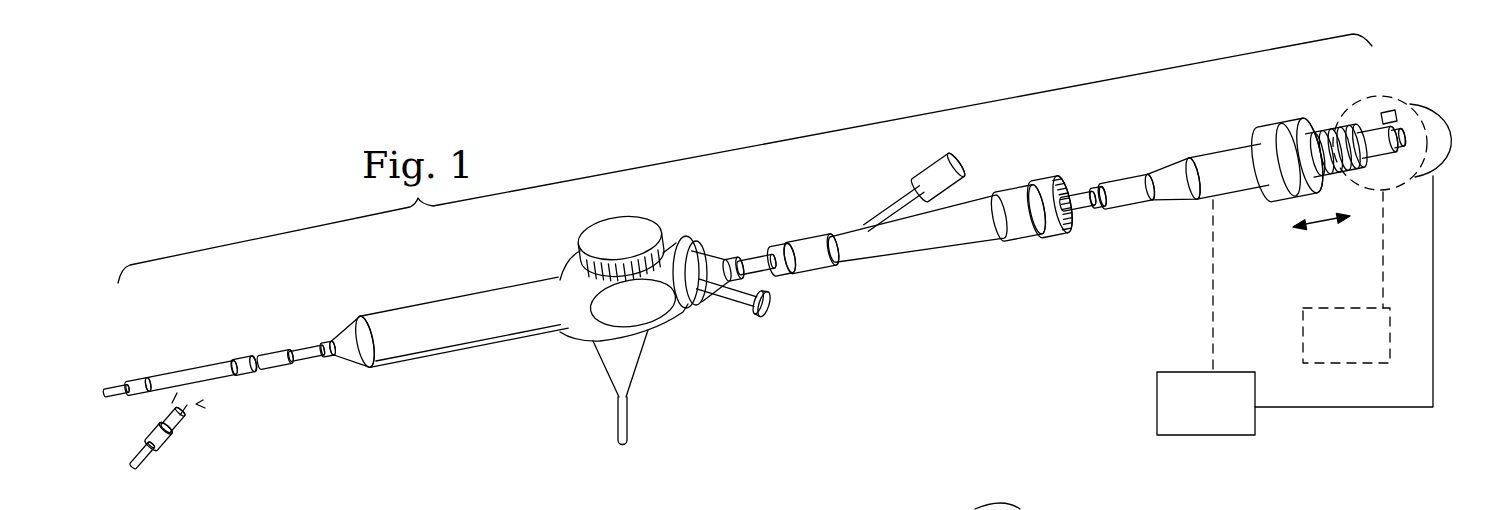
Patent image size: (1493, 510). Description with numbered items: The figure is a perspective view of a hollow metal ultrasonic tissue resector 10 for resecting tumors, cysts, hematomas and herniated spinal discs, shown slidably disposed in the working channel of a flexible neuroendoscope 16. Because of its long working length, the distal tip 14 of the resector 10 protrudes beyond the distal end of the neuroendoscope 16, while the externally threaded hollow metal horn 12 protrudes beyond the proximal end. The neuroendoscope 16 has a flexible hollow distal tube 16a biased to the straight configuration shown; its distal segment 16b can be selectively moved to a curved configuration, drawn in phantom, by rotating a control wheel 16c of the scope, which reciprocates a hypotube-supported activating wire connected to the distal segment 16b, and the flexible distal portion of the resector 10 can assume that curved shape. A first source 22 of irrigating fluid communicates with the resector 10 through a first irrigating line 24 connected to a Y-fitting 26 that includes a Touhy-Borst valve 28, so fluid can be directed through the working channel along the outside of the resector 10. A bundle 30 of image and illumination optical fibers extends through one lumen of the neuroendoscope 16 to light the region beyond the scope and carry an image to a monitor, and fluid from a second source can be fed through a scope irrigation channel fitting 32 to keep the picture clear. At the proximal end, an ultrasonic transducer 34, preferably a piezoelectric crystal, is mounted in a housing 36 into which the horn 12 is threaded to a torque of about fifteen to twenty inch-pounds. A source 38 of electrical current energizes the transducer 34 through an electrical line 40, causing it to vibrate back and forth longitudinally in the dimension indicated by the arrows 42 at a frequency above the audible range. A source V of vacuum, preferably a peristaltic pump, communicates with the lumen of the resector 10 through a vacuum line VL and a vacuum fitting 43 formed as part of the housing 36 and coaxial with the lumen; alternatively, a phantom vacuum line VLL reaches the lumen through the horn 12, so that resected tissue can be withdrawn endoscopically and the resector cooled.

The ultrasonic tissue resector 10 is at (1203, 136).
The horn 12 is at (1307, 137).
The distal tip 14 is at (113, 372).
The neuroendoscope 16 is at (433, 347).
The flexible hollow distal tube 16a is at (217, 357).
The distal segment 16b is at (200, 410).
The control wheel 16c is at (645, 233).
The first source of irrigating fluid 22 is at (960, 175).
The first irrigating line 24 is at (900, 203).
The Y-fitting 26 is at (903, 247).
The Touhy-Borst valve 28 is at (1027, 223).
The bundle of image and illumination optical fibers 30 is at (620, 417).
The scope irrigation channel fitting 32 is at (767, 317).
The ultrasonic transducer 34 is at (1381, 107).
The housing 36 is at (1333, 115).
The source of electrical current 38 is at (1303, 335).
The electrical line 40 is at (1382, 260).
The arrows 42 is at (1322, 223).
The vacuum fitting 43 is at (1438, 110).
The source of vacuum V is at (1195, 435).
The vacuum line VL is at (1340, 407).
The vacuum line VLL is at (1213, 292).